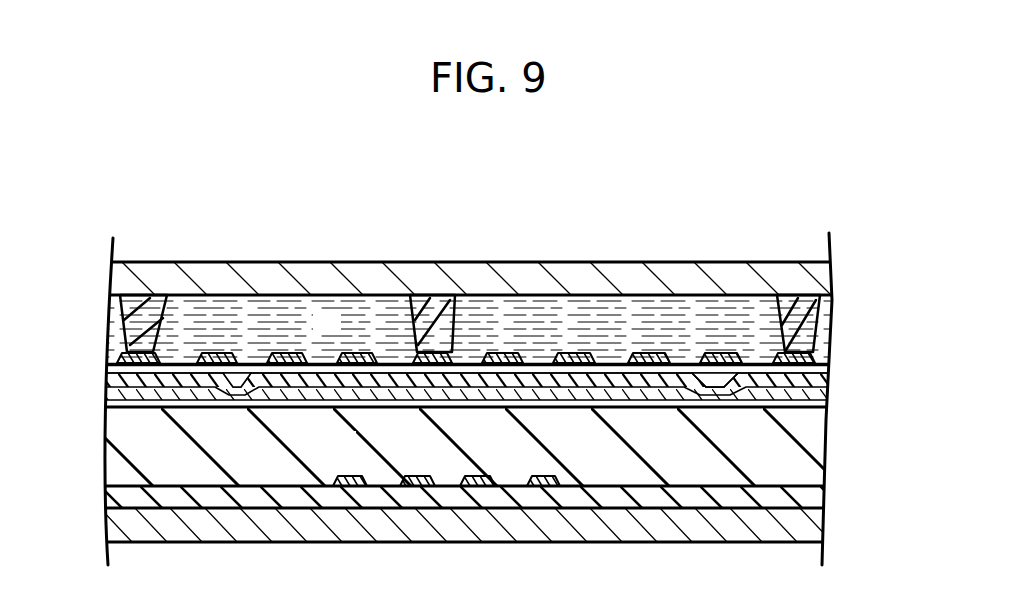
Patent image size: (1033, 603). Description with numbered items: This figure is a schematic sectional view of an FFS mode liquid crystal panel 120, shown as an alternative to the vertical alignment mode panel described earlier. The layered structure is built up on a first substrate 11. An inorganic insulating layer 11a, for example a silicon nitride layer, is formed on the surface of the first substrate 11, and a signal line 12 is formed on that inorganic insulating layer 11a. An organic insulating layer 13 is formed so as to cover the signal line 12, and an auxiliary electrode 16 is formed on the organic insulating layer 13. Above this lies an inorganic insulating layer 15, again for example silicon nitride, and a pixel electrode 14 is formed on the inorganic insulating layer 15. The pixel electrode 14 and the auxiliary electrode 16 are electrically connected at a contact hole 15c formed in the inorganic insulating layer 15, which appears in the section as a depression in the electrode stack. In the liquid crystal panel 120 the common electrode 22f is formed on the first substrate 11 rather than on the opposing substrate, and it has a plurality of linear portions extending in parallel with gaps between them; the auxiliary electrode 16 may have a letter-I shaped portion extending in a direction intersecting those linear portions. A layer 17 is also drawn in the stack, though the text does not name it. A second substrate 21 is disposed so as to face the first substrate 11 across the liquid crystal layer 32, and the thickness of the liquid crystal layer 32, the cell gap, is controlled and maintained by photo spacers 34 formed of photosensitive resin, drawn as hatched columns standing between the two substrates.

The FFS mode liquid crystal panel 120 is at (820, 159).
The second substrate 21 is at (812, 282).
The liquid crystal layer 32 is at (338, 335).
The photo spacer 34 is at (122, 322).
The common electrode 22f is at (832, 350).
The alignment film 17 is at (830, 373).
The pixel electrode 14 is at (830, 379).
The inorganic insulating layer 15 is at (830, 390).
The contact hole 15c is at (715, 380).
The auxiliary electrode 16 is at (830, 403).
The organic insulating layer 13 is at (353, 457).
The signal line 12 is at (577, 473).
The inorganic insulating layer 11a is at (807, 502).
The first substrate 11 is at (807, 527).